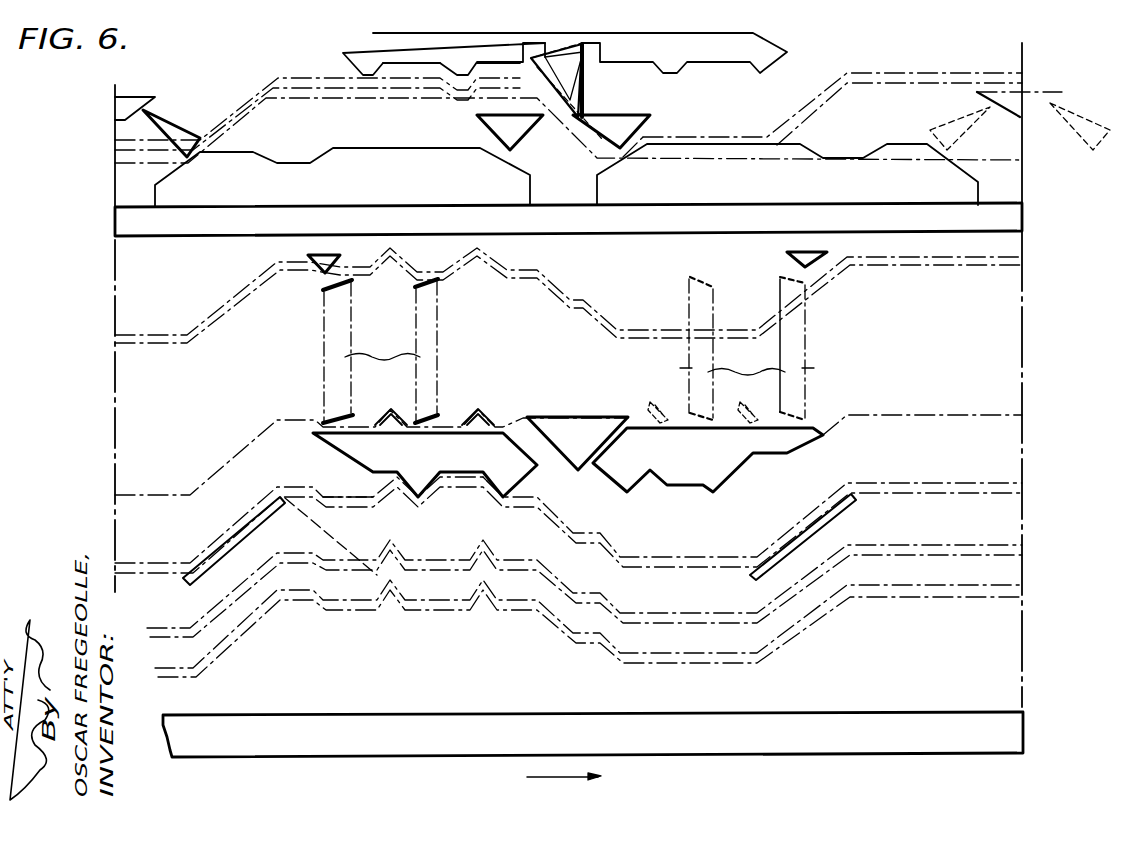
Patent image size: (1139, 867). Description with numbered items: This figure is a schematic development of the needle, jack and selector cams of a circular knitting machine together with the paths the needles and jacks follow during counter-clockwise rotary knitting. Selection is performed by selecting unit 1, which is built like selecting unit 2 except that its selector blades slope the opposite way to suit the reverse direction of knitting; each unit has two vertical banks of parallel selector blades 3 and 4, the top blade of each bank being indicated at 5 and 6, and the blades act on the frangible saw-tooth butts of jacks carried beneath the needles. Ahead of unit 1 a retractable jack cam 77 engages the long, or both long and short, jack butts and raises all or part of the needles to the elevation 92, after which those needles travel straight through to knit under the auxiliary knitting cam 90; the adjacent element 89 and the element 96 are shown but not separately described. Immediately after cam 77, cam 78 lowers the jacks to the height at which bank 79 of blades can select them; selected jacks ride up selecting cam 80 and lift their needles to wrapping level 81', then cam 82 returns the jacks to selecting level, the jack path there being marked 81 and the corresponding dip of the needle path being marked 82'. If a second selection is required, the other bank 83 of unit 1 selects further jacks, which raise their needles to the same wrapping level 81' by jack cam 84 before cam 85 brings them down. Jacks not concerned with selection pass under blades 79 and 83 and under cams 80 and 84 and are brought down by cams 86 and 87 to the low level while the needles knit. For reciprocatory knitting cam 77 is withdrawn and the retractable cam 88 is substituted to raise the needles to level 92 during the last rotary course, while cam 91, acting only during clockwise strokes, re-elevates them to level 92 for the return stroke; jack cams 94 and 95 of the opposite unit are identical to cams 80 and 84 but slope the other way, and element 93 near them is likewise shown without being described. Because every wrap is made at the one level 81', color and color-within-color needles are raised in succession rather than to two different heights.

The selecting unit 1 is at (568, 304).
The selecting unit 2 is at (746, 360).
The selector blades 3 is at (815, 370).
The selector blades 4 is at (679, 370).
The top blade 5 is at (788, 279).
The top blade 6 is at (694, 278).
The jack cam 77 is at (258, 516).
The cam 78 is at (318, 271).
The bank of selector blades 79 is at (348, 308).
The selecting cam 80 is at (391, 414).
The strip portion 81 is at (364, 512).
The cam 82 is at (425, 465).
The bank of selector blades 83 is at (440, 318).
The jack cam 84 is at (478, 414).
The cam 85 is at (490, 488).
The cam 86 is at (590, 458).
The cam 87 is at (610, 480).
The cam 88 is at (802, 532).
The cutting blade 89 is at (565, 113).
The auxiliary knitting cam 90 is at (607, 145).
The cam 91 is at (332, 527).
The elevation 92 is at (318, 78).
The pilot 93 is at (820, 254).
The jack cam 94 is at (758, 417).
The jack cam 95 is at (668, 417).
The pilot 96 is at (528, 142).
The wrapping level 81' is at (451, 52).
The punch tooth 82' is at (565, 54).